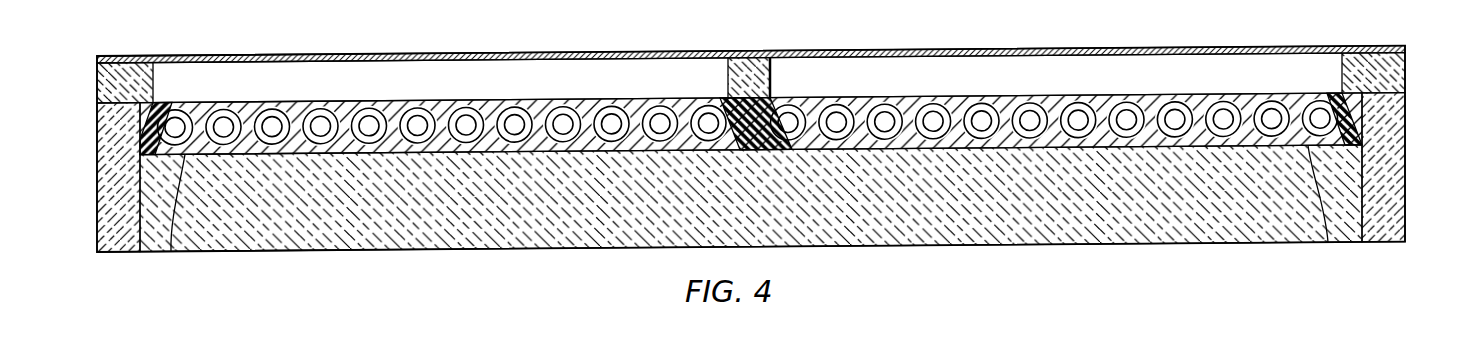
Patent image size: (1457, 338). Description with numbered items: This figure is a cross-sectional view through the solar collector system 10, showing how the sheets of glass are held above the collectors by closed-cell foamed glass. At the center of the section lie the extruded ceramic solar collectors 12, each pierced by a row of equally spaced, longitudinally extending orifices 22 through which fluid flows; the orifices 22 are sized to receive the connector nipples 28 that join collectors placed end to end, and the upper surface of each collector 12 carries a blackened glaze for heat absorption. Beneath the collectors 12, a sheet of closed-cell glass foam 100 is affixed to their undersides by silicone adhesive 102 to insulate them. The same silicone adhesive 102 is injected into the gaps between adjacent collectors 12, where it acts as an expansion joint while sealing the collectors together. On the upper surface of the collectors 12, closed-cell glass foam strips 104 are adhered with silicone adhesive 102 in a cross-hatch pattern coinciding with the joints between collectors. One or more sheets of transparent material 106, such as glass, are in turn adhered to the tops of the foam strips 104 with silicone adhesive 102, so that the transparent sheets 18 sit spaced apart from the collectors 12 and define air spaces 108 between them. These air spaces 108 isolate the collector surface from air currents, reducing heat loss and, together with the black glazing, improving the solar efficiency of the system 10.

The solar collector system 10 is at (680, 34).
The extruded ceramic solar collector 12 is at (283, 102).
The sheet of transparent material 18 is at (358, 56).
The longitudinally extending orifice 22 is at (330, 111).
The connector nipple 28 is at (458, 109).
The sheet of closed-cell glass foam 100 is at (330, 240).
The silicone adhesive 102 is at (122, 86).
The closed-cell glass foam strip 104 is at (96, 95).
The sheet of transparent material 106 is at (1065, 50).
The air space 108 is at (547, 77).